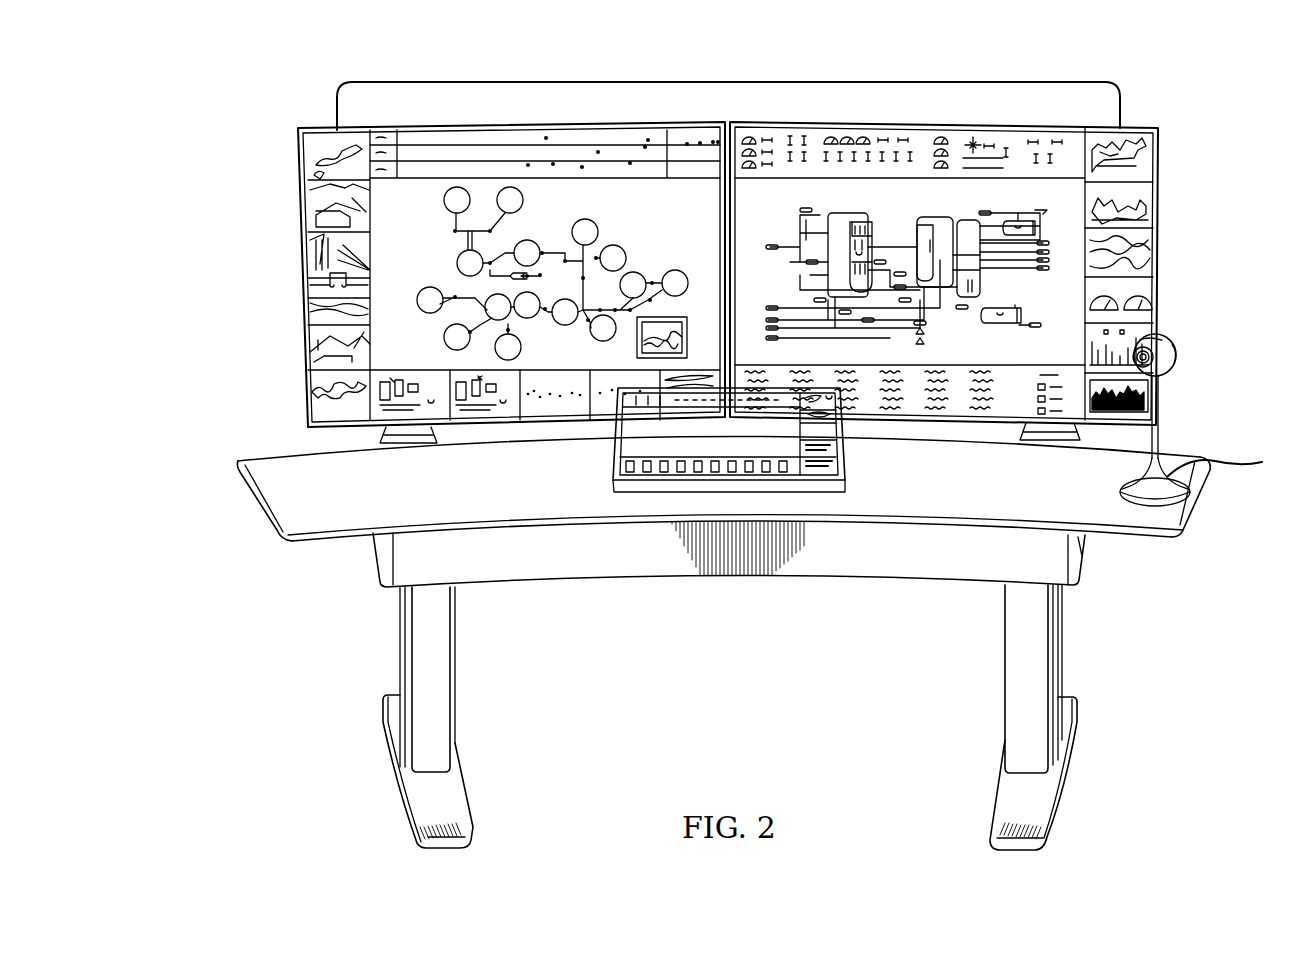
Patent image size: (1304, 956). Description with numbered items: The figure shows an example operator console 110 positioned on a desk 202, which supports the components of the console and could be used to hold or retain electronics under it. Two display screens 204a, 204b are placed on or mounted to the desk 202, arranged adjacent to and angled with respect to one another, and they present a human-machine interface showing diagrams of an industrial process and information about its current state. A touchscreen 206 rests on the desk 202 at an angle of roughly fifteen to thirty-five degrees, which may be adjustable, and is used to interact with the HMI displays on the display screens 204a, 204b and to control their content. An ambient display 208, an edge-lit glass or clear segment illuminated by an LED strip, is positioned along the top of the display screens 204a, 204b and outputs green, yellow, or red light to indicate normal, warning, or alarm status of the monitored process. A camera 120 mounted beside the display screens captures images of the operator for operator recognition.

The operator console 110 is at (1224, 136).
The ambient display 208 is at (337, 110).
The display screen 204a is at (300, 281).
The display screen 204b is at (1160, 279).
The camera 120 is at (1178, 357).
The touchscreen 206 is at (612, 444).
The desk 202 is at (661, 576).